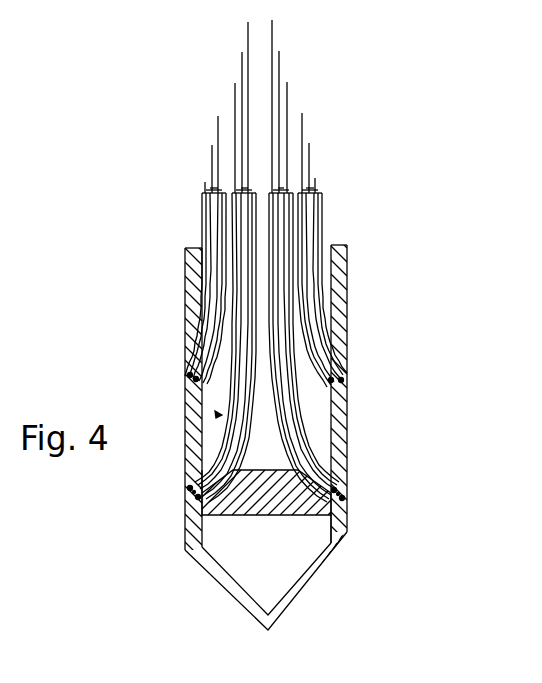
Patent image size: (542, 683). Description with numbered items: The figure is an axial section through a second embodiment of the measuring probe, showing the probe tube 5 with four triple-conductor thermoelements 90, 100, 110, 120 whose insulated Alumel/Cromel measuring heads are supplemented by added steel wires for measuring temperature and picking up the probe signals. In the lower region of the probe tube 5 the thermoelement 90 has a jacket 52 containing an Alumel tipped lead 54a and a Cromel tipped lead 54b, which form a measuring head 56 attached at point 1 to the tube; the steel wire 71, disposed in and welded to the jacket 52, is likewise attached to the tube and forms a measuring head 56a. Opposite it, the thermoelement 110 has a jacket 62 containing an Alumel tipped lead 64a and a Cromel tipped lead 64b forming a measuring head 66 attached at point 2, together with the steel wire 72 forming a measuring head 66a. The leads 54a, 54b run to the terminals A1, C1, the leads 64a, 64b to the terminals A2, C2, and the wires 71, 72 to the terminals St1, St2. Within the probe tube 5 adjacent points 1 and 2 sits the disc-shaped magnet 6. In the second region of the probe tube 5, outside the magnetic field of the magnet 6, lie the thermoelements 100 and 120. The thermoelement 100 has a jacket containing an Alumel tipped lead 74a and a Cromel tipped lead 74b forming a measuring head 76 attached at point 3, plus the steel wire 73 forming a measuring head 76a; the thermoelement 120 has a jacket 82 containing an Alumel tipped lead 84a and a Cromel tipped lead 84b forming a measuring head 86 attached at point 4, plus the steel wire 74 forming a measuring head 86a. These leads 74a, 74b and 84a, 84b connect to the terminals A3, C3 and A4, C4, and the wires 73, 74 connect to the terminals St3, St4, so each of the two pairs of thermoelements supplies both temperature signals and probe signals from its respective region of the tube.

The attachment point 1 is at (178, 491).
The attachment point 2 is at (355, 490).
The attachment point 3 is at (178, 375).
The attachment point 4 is at (351, 376).
The probe tube 5 is at (184, 345).
The disc-shaped magnet 6 is at (268, 498).
The jacket 52 is at (193, 457).
The Alumel tipped lead 54a is at (197, 465).
The Cromel tipped lead 54b is at (183, 470).
The measuring head 56 is at (197, 497).
The measuring head 56a is at (190, 492).
The jacket 62 is at (350, 467).
The Alumel tipped lead 64a is at (320, 420).
The Cromel tipped lead 64b is at (320, 403).
The measuring head 66 is at (350, 495).
The measuring head 66a is at (353, 510).
The steel wire 71 is at (187, 495).
The steel wire 72 is at (187, 320).
The steel wire 73 is at (185, 272).
The steel wire 74 is at (345, 267).
The Alumel tipped lead 74a is at (208, 250).
The Cromel tipped lead 74b is at (203, 226).
The measuring head 76 is at (190, 365).
The measuring head 76a is at (188, 380).
The jacket 82 is at (345, 313).
The Alumel tipped lead 84a is at (318, 232).
The Cromel tipped lead 84b is at (318, 222).
The measuring head 86 is at (345, 342).
The measuring head 86a is at (345, 363).
The thermoelement 90 is at (222, 415).
The thermoelement 100 is at (197, 302).
The thermoelement 110 is at (347, 438).
The thermoelement 120 is at (345, 292).
The terminal C1 is at (248, 22).
The terminal A1 is at (242, 52).
The terminal St1 is at (235, 83).
The terminal C2 is at (272, 20).
The terminal A2 is at (279, 51).
The terminal St2 is at (287, 82).
The terminal C3 is at (218, 116).
The terminal A3 is at (212, 145).
The terminal St3 is at (205, 182).
The terminal C4 is at (302, 113).
The terminal A4 is at (309, 143).
The terminal St4 is at (315, 178).